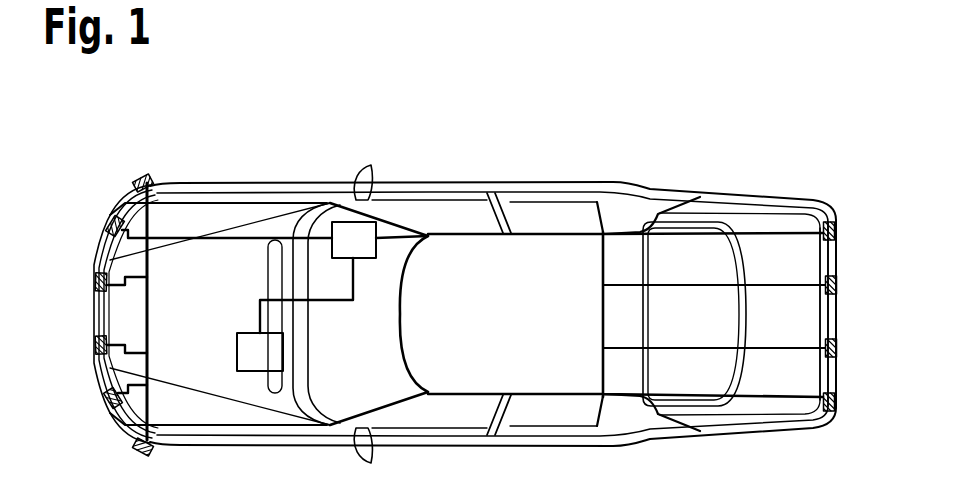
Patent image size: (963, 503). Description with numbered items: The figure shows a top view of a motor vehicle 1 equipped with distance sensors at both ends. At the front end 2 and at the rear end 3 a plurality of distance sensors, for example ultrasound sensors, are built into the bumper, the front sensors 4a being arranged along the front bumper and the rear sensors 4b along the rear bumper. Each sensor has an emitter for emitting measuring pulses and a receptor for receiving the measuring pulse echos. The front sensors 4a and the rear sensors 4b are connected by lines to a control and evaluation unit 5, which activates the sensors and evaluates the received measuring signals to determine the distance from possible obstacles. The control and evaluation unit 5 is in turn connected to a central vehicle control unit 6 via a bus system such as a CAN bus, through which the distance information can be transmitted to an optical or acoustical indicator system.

The motor vehicle 1 is at (470, 150).
The front end 2 is at (196, 160).
The rear end 3 is at (789, 165).
The front distance sensors 4a is at (118, 434).
The rear distance sensors 4b is at (845, 396).
The control and evaluation unit 5 is at (287, 240).
The central vehicle control unit 6 is at (295, 316).